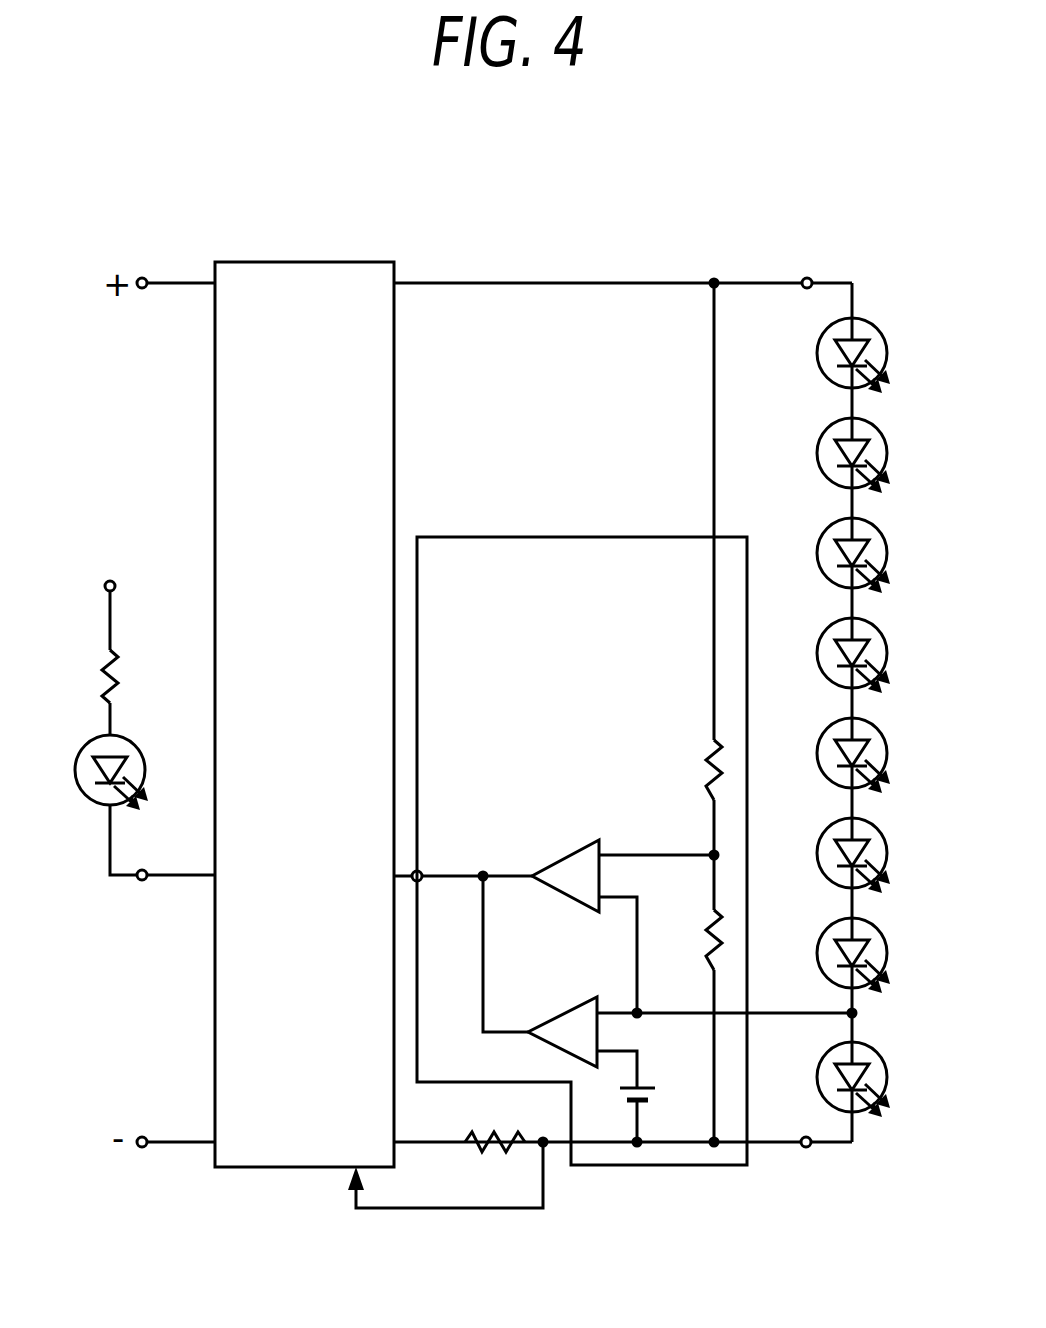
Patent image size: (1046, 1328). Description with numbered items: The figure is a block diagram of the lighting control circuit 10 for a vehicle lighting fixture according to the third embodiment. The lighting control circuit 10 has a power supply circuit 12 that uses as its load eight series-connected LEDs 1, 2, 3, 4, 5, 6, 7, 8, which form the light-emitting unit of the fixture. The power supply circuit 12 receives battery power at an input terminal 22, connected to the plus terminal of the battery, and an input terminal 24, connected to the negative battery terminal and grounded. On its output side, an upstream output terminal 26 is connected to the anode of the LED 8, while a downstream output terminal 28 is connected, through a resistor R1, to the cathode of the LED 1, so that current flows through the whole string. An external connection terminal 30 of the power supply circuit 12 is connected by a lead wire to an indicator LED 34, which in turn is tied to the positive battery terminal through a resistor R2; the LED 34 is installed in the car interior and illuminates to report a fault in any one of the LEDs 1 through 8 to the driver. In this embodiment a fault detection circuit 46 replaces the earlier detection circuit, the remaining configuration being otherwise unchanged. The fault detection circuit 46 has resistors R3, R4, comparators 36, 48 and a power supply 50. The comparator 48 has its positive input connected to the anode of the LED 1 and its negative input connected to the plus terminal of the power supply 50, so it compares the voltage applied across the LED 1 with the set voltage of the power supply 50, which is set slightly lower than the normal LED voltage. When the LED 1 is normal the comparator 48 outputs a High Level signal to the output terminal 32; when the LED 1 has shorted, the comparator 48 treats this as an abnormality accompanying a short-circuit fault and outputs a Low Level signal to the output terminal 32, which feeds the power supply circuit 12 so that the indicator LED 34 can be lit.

The lighting control circuit 10 is at (465, 232).
The power supply circuit 12 is at (252, 262).
The input terminal 22 is at (142, 278).
The input terminal 24 is at (142, 1148).
The output terminal 26 is at (808, 278).
The output terminal 28 is at (808, 1148).
The external connection terminal 30 is at (140, 881).
The output terminal 32 is at (422, 866).
The LED 34 is at (96, 801).
The comparator 36 is at (560, 856).
The fault detection circuit 46 is at (532, 535).
The comparator 48 is at (558, 1012).
The power supply 50 is at (650, 1092).
The LED 1 is at (882, 1050).
The LED 2 is at (879, 931).
The LED 3 is at (879, 831).
The LED 4 is at (879, 731).
The LED 5 is at (879, 631).
The LED 6 is at (879, 531).
The LED 7 is at (879, 431).
The LED 8 is at (879, 331).
The resistor R1 is at (495, 1123).
The resistor R2 is at (131, 676).
The resistor R3 is at (691, 770).
The resistor R4 is at (692, 940).